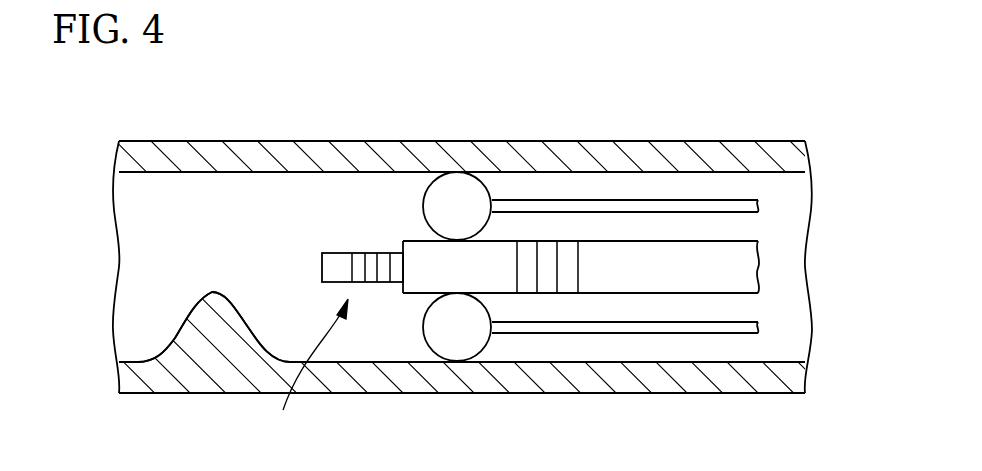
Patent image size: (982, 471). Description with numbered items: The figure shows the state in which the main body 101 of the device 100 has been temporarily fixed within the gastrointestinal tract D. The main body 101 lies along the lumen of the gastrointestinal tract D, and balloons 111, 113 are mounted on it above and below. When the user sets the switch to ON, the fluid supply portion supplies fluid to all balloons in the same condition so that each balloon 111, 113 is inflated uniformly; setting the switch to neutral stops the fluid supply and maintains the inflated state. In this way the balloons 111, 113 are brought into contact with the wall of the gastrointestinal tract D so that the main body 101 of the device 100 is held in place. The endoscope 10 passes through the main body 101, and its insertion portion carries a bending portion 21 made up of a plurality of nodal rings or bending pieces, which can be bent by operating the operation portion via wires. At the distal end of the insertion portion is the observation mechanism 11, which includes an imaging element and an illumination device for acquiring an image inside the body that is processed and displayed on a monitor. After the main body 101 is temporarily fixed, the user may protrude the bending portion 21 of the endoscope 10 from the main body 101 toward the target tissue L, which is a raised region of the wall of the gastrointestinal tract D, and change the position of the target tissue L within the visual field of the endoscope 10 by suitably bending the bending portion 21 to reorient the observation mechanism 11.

The gastrointestinal tract D is at (565, 160).
The target tissue L is at (212, 300).
The endoscope 10 is at (310, 374).
The observation mechanism 11 is at (322, 267).
The bending portion 21 is at (370, 275).
The balloon 111 is at (440, 203).
The balloon 113 is at (457, 333).
The main body 101 is at (620, 267).
The medical device 100 is at (581, 327).